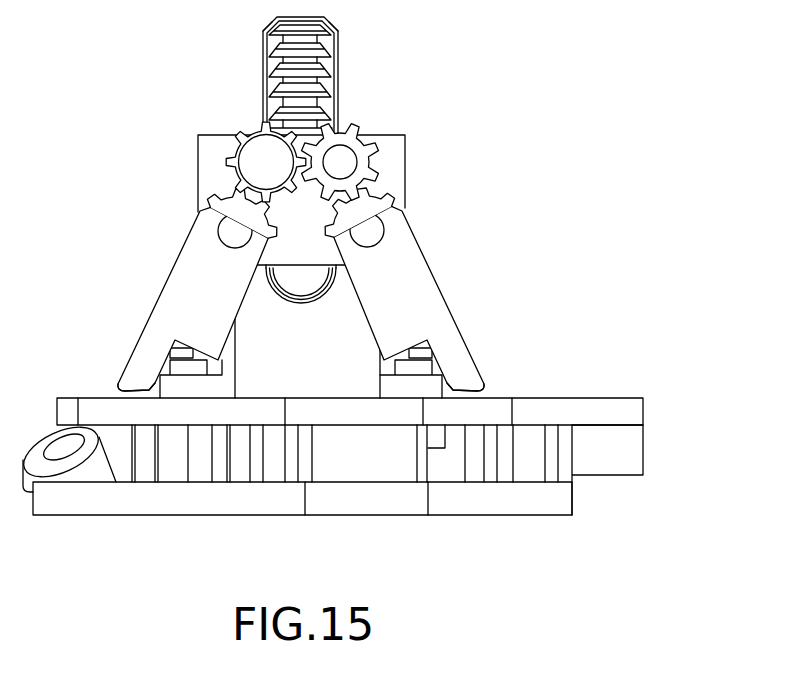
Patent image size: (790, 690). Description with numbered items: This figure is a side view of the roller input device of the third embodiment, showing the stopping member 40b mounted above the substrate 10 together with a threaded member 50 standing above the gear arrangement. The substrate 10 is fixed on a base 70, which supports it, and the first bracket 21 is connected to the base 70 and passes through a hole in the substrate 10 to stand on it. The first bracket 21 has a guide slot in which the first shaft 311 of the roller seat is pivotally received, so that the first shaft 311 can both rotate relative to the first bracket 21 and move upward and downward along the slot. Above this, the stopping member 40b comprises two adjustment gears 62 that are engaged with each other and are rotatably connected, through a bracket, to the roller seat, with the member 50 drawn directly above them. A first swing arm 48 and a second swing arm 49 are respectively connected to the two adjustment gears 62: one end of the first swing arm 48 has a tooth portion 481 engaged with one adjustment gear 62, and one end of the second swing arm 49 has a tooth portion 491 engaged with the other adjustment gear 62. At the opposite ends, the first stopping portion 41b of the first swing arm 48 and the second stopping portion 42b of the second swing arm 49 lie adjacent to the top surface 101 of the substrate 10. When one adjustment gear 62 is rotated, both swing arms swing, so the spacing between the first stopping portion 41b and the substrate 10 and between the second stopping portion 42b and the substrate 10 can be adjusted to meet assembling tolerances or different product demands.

The lead screw 50 is at (339, 96).
The adjustment gear 62 is at (234, 164).
The tooth portion 491 is at (222, 198).
The tooth portion 481 is at (380, 200).
The second swing arm 49 is at (211, 231).
The first swing arm 48 is at (391, 231).
The stopping member 40b is at (282, 376).
The top surface 101 is at (603, 398).
The second stopping portion 42b is at (121, 393).
The first stopping portion 41b is at (485, 392).
The first bracket 21 is at (280, 383).
The first shaft 311 is at (308, 278).
The substrate 10 is at (329, 453).
The base 70 is at (538, 493).